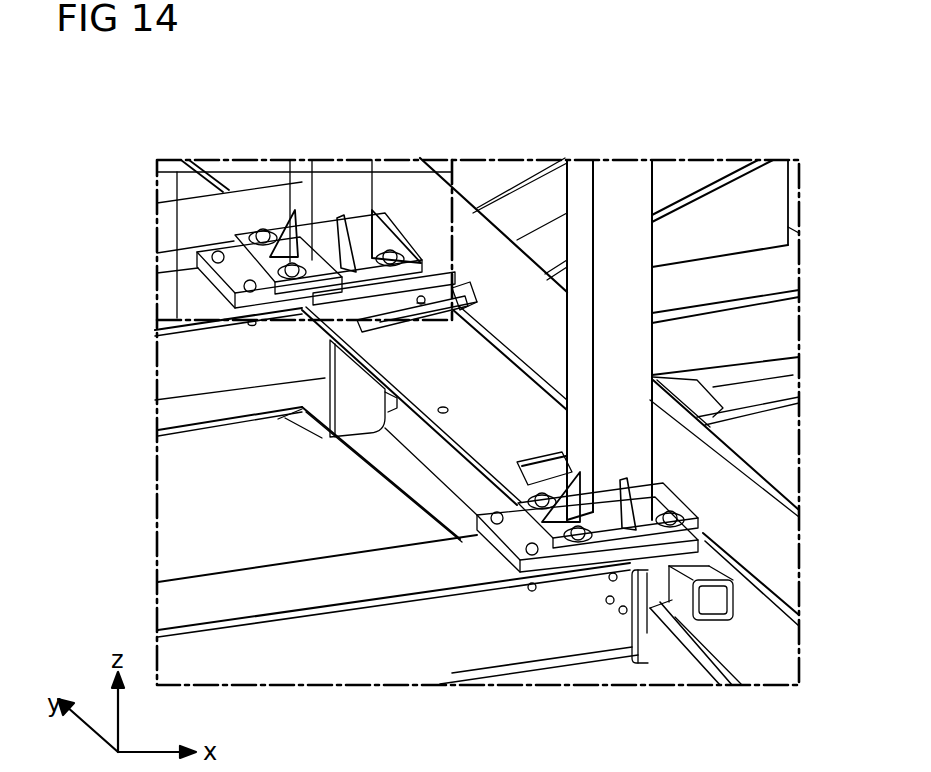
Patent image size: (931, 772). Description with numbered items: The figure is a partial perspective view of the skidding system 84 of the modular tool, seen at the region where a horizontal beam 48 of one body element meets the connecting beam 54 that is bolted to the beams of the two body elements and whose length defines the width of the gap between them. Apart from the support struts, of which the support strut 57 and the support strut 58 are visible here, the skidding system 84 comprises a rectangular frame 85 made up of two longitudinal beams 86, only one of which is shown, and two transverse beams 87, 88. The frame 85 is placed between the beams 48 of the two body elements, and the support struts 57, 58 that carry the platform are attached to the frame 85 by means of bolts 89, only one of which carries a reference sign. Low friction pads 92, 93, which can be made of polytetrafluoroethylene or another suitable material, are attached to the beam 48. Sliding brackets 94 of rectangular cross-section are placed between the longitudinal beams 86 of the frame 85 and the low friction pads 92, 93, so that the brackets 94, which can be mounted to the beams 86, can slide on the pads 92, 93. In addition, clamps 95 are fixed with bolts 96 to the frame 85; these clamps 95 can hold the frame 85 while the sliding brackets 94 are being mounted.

The skidding system 84 is at (414, 134).
The connecting beam 54 is at (196, 196).
The support strut 57 is at (362, 213).
The support strut 58 is at (655, 262).
The bolt 89 is at (232, 278).
The clamp 95 is at (464, 292).
The bolt 96 is at (421, 296).
The rectangular frame 85 is at (349, 495).
The longitudinal beam 86 is at (330, 433).
The transverse beam 87 is at (172, 435).
The transverse beam 88 is at (186, 588).
The horizontal beam 48 is at (768, 482).
The sliding bracket 94 is at (707, 575).
The low friction pad 93 is at (790, 652).
The low friction pad 92 is at (773, 681).